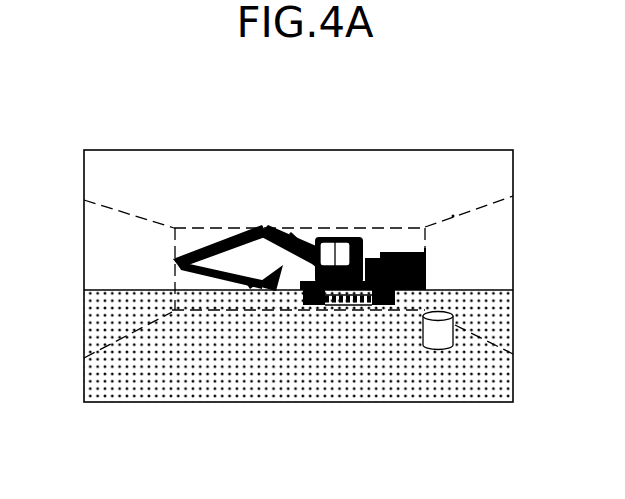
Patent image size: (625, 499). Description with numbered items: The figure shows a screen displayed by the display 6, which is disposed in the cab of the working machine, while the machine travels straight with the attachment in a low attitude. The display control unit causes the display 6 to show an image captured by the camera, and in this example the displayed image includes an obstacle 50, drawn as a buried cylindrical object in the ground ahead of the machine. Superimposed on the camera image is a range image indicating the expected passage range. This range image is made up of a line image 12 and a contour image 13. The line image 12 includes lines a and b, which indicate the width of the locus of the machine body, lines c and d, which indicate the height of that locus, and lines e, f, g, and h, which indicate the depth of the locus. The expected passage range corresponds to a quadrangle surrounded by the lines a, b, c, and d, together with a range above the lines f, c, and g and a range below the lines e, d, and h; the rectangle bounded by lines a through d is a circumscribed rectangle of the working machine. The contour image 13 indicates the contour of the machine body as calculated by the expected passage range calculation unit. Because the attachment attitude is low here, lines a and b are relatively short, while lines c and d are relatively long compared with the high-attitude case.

The display 6 is at (514, 372).
The obstacle 50 is at (460, 325).
The contour image 13 is at (375, 253).
The line image 12 is at (453, 215).
The line a is at (172, 277).
The line b is at (425, 248).
The line c is at (213, 227).
The line d is at (275, 312).
The line e is at (113, 344).
The line f is at (142, 217).
The line g is at (488, 208).
The line h is at (486, 338).